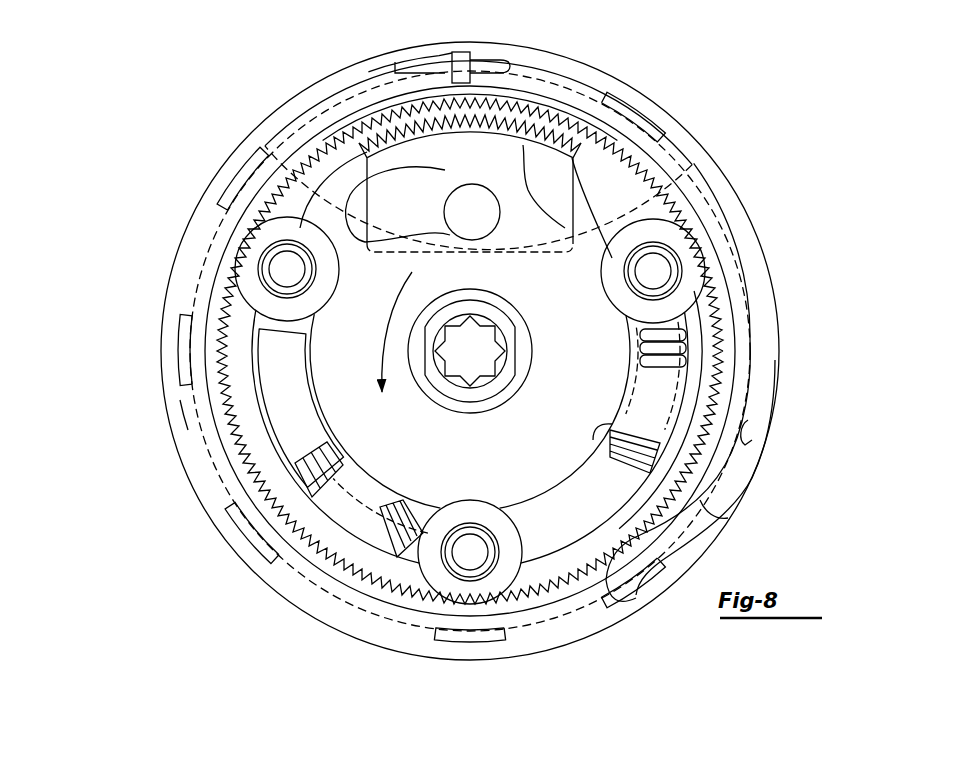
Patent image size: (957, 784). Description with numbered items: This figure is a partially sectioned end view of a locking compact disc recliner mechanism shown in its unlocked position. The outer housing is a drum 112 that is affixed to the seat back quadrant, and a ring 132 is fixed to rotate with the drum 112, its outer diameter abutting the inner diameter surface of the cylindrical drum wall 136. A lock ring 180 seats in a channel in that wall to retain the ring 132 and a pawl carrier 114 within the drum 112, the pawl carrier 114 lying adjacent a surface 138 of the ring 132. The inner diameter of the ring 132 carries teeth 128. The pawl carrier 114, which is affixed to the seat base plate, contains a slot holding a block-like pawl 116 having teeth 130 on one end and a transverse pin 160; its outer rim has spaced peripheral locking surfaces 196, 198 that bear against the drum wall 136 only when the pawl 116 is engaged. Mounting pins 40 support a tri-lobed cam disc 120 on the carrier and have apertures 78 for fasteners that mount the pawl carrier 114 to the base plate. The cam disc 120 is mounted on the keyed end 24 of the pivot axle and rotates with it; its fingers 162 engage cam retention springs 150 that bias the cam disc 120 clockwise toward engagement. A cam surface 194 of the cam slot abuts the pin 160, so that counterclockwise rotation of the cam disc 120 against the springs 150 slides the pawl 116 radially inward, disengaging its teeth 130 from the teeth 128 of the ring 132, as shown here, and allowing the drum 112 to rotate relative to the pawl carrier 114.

The keyed end 24 is at (478, 385).
The mounting pins 40 is at (249, 251).
The apertures 78 is at (655, 263).
The drum 112 is at (660, 100).
The pawl carrier 114 is at (642, 565).
The pawl 116 is at (396, 167).
The cam disc 120 is at (414, 468).
The teeth 128 is at (455, 55).
The teeth 130 is at (395, 118).
The ring 132 is at (583, 128).
The cylindrical drum wall 136 is at (732, 478).
The surface 138 is at (520, 68).
The cam retention springs 150 is at (691, 346).
The pin 160 is at (485, 215).
The fingers 162 is at (339, 418).
The lock ring 180 is at (669, 165).
The cam surface 194 is at (550, 510).
The peripheral locking surface 196 is at (756, 433).
The peripheral locking surface 198 is at (195, 447).